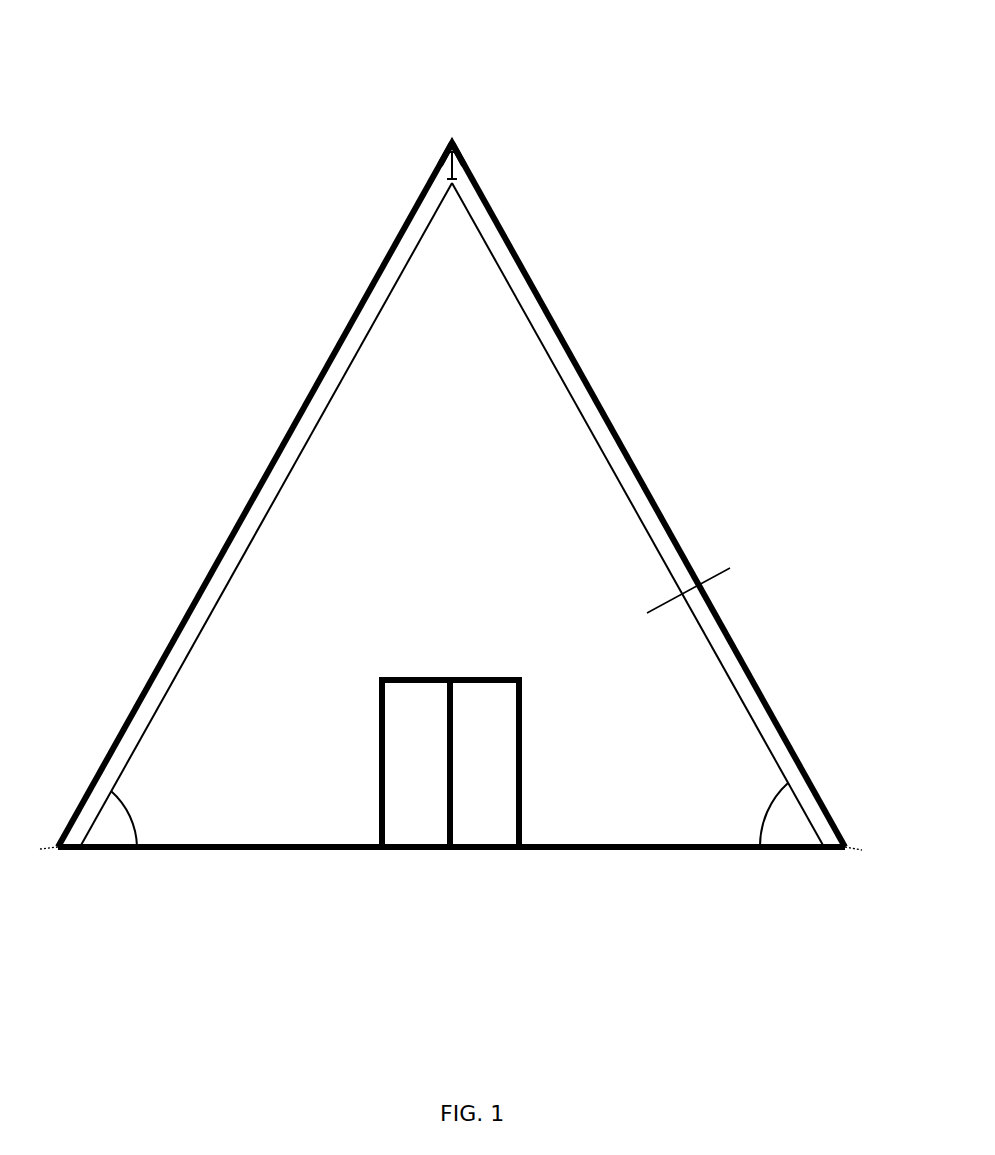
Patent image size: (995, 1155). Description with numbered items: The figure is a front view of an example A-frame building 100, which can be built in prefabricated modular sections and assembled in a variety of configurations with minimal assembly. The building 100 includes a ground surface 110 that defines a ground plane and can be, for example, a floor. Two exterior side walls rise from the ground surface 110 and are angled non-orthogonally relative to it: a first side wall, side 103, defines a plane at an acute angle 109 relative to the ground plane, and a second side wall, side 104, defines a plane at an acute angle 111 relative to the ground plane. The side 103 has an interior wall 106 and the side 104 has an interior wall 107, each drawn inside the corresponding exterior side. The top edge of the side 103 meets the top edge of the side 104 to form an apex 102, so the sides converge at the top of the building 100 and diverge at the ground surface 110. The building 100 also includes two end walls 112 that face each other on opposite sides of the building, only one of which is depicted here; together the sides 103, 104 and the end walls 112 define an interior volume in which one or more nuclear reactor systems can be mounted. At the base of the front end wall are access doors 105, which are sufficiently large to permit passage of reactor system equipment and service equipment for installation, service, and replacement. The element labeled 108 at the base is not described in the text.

The A-frame building 100 is at (236, 73).
The apex 102 is at (453, 145).
The first side wall 103 is at (325, 367).
The second side wall 104 is at (583, 373).
The access doors 105 is at (412, 678).
The interior wall 106 is at (292, 473).
The interior wall 107 is at (600, 453).
The base 108 is at (300, 843).
The acute angle 109 is at (150, 791).
The ground surface 110 is at (591, 865).
The acute angle 111 is at (740, 793).
The end walls 112 is at (730, 568).